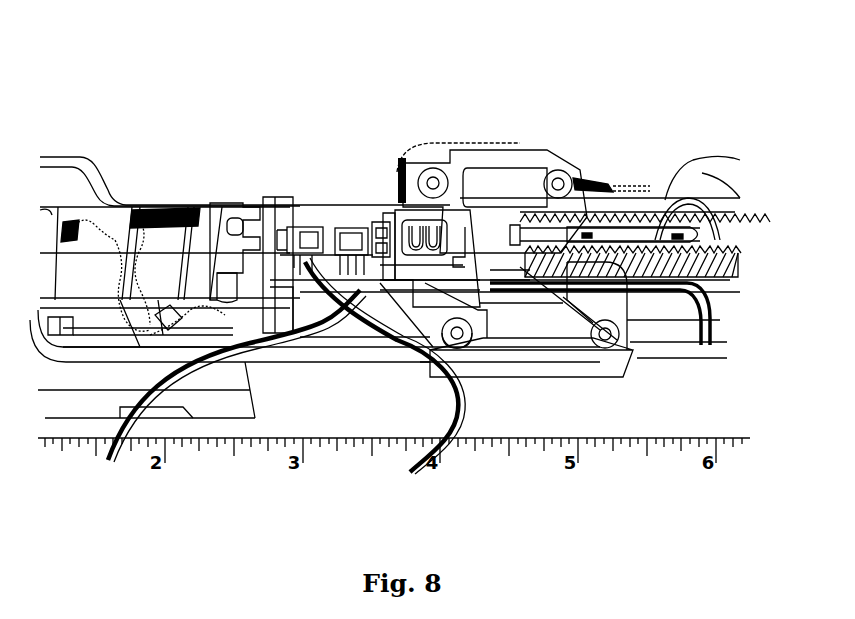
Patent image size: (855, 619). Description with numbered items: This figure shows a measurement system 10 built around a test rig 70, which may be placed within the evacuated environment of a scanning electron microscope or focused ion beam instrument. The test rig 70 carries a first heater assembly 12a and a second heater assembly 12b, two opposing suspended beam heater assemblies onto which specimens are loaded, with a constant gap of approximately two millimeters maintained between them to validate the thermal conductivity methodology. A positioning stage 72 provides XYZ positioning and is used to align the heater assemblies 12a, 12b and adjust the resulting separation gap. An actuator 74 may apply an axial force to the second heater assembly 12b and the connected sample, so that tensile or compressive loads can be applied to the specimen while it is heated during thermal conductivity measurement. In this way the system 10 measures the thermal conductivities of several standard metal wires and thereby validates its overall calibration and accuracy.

The measurement system 10 is at (505, 72).
The test rig 70 is at (211, 213).
The first heater assembly 12a is at (305, 232).
The second heater assembly 12b is at (352, 233).
The positioning stage 72 is at (424, 222).
The actuator 74 is at (622, 237).